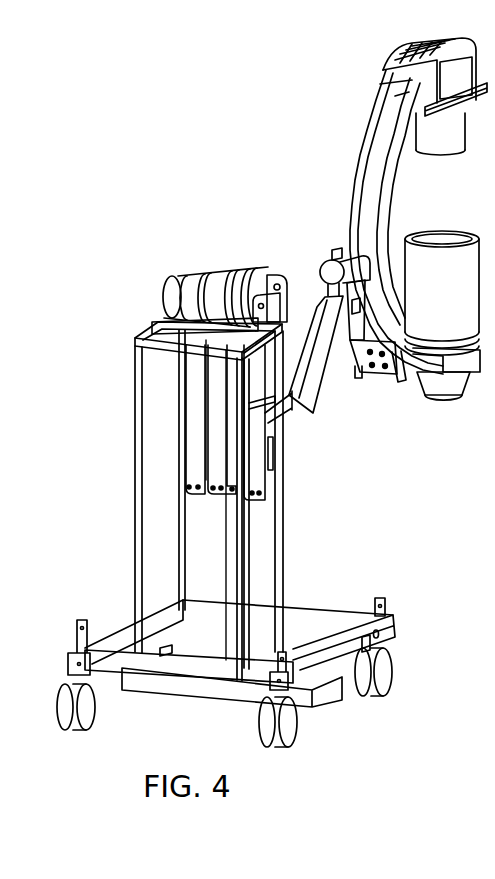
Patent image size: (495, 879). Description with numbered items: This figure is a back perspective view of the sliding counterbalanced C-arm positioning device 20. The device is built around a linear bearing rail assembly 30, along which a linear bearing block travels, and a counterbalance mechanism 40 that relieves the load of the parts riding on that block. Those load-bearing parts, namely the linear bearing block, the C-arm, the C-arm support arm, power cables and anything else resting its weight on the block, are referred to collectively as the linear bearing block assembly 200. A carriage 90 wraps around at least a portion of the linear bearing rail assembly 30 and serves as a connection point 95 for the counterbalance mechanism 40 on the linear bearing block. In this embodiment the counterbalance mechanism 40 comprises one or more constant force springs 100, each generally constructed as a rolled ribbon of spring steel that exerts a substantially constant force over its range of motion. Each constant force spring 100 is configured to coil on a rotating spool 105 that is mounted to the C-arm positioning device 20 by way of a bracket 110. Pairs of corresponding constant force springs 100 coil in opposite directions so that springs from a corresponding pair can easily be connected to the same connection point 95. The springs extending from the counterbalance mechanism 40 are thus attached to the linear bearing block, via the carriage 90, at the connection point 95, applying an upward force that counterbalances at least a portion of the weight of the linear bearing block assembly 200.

The sliding counterbalanced C-arm positioning device 20 is at (276, 178).
The linear bearing rail assembly 30 is at (253, 601).
The counterbalance mechanism 40 is at (153, 277).
The carriage 90 is at (270, 459).
The connection point 95 is at (190, 498).
The constant force springs 100 is at (196, 272).
The rotating spool 105 is at (284, 280).
The bracket 110 is at (266, 293).
The linear bearing block assembly 200 is at (336, 395).